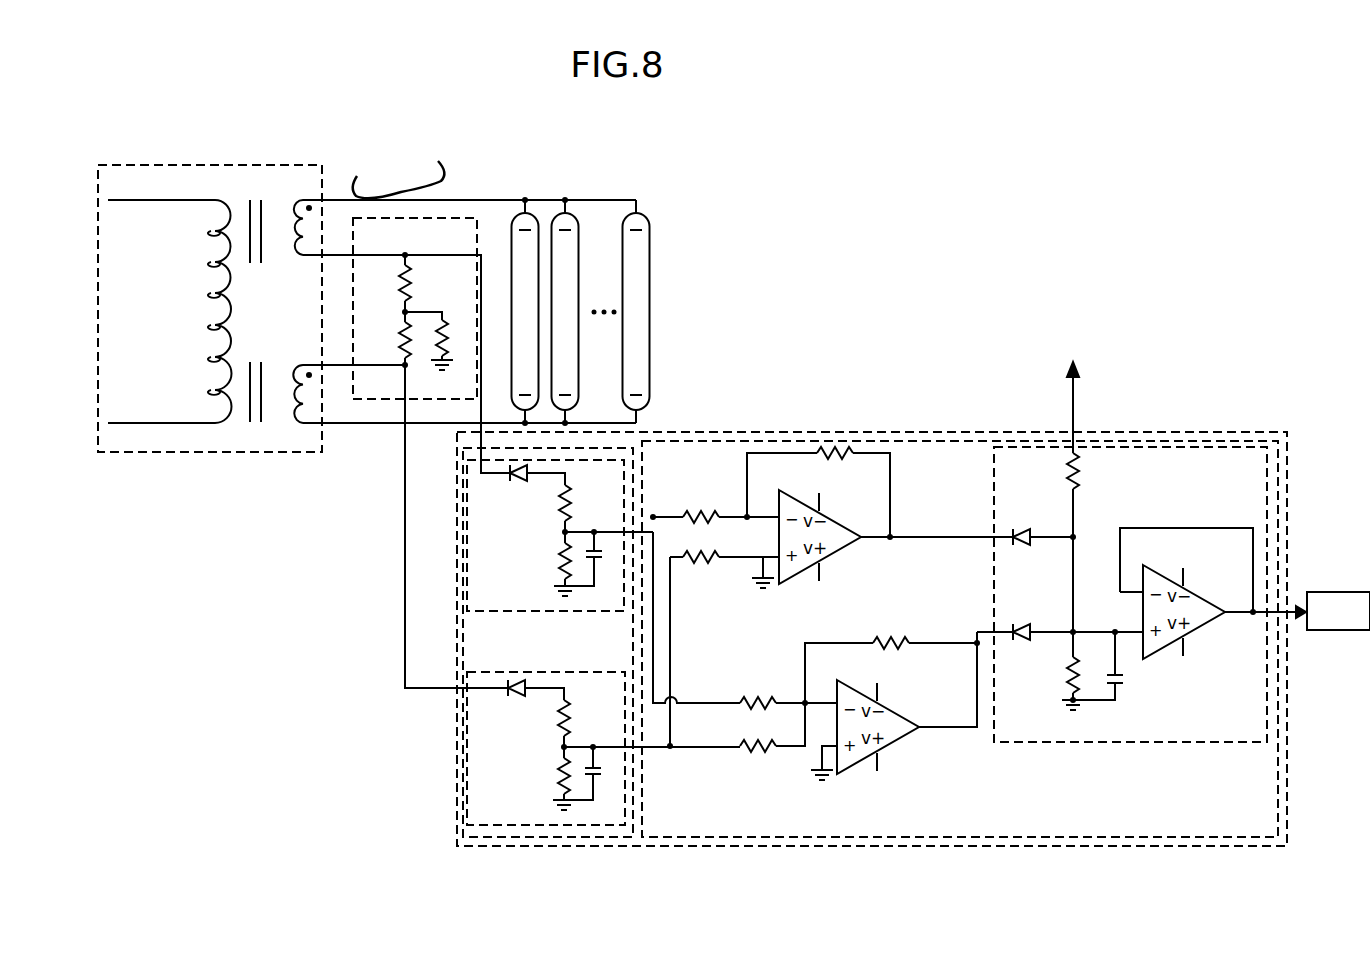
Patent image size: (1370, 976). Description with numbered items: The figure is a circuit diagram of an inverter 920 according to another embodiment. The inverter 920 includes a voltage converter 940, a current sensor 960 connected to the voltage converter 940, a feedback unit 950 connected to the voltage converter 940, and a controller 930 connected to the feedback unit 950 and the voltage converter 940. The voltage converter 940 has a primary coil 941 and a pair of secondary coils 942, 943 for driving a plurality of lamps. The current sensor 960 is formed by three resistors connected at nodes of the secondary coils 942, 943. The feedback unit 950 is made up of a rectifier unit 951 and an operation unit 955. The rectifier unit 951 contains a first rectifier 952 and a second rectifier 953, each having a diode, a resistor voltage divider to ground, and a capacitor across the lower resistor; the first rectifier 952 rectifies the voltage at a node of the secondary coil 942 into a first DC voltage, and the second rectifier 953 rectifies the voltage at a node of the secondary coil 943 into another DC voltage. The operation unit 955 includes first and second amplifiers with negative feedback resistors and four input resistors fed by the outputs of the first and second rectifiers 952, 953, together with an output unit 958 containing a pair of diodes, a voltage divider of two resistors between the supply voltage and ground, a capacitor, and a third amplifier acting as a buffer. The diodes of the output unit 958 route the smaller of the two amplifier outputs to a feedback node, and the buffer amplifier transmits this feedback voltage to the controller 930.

The inverter 920 is at (792, 151).
The controller 930 is at (1318, 626).
The voltage converter 940 is at (160, 165).
The primary coil 941 is at (215, 200).
The secondary coil 942 is at (302, 200).
The secondary coil 943 is at (300, 423).
The feedback unit 950 is at (875, 432).
The rectifier unit 951 is at (463, 810).
The first rectifier 952 is at (503, 613).
The second rectifier 953 is at (548, 825).
The operation unit 955 is at (961, 441).
The output unit 958 is at (1133, 447).
The current sensor 960 is at (409, 218).